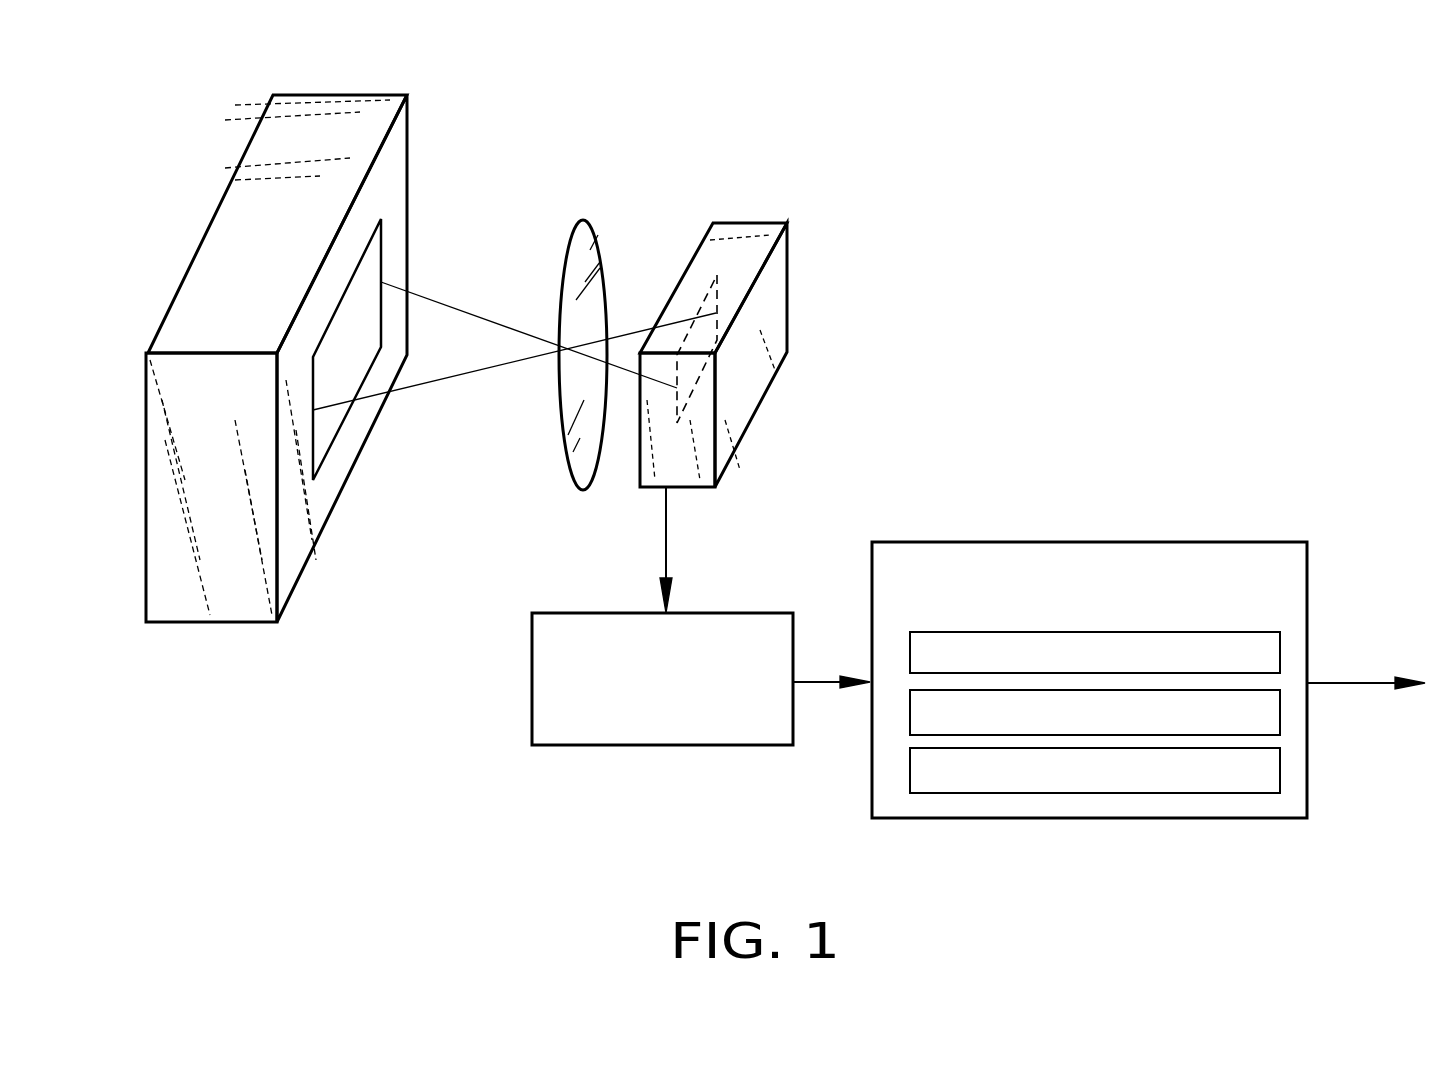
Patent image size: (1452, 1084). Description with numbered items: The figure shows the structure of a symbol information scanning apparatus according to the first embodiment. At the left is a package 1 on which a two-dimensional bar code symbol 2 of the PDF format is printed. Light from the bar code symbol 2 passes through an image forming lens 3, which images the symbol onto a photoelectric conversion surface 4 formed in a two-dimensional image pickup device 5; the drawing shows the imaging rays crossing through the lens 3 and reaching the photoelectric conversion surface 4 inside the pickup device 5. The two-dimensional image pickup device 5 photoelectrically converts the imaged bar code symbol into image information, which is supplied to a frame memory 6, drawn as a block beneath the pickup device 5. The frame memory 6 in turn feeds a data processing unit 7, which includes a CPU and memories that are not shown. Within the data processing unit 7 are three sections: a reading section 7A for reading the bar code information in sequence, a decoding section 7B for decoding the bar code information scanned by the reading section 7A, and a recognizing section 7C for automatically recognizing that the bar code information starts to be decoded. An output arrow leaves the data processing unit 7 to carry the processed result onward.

The package 1 is at (407, 130).
The bar code symbol 2 is at (372, 263).
The image forming lens 3 is at (573, 380).
The photoelectric conversion surface 4 is at (770, 373).
The two-dimensional image pickup device 5 is at (787, 263).
The frame memory 6 is at (737, 613).
The data processing unit 7 is at (1087, 650).
The reading section 7A is at (1275, 657).
The decoding section 7B is at (915, 713).
The recognizing section 7C is at (1275, 787).